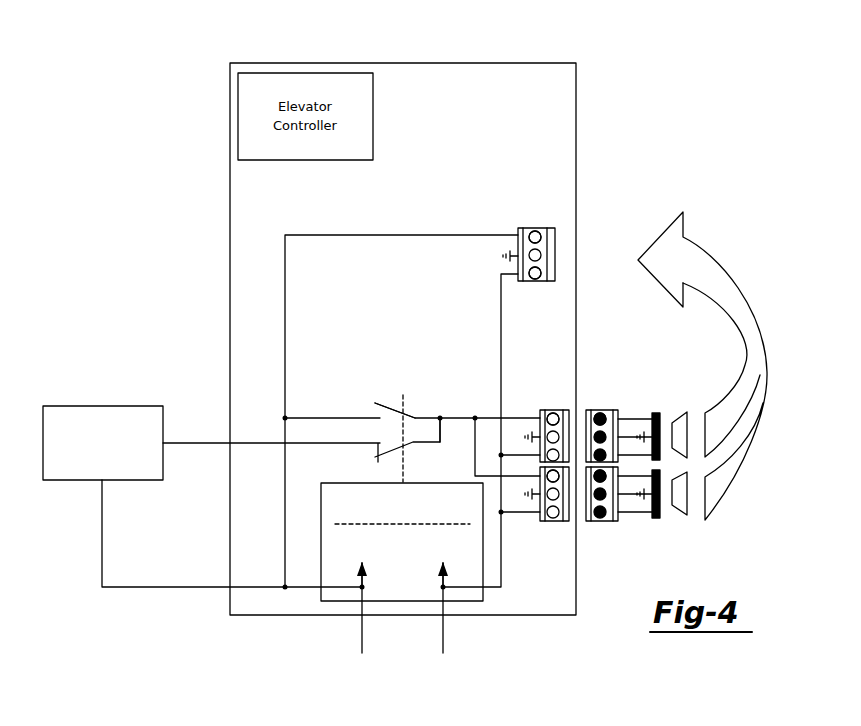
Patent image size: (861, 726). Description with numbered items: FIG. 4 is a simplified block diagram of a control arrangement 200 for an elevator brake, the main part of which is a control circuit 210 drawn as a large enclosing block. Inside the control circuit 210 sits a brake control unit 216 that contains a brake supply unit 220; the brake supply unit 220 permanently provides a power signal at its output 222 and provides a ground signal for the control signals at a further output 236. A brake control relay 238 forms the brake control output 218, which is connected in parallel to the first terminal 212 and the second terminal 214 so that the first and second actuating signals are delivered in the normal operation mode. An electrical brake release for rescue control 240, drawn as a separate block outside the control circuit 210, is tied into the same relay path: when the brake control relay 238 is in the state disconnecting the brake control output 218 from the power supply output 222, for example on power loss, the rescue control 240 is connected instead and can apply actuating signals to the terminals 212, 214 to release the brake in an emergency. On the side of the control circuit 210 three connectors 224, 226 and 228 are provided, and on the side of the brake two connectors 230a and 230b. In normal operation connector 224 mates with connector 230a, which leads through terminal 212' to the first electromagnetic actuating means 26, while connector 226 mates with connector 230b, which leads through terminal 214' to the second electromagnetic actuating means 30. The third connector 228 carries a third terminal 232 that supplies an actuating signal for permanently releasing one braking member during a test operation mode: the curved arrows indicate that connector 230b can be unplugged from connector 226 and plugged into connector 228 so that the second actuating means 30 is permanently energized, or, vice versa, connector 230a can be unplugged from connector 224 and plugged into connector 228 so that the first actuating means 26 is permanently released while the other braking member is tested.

The control arrangement 200 is at (235, 28).
The control circuit 210 is at (402, 60).
The electrical brake release for rescue control 240 is at (103, 406).
The brake control unit 216 is at (321, 498).
The brake supply unit 220 is at (402, 588).
The brake control relay 238 is at (383, 402).
The brake control output 218 is at (440, 416).
The third connector 228 is at (517, 226).
The third terminal 232 is at (541, 237).
The connector 226 is at (538, 409).
The second terminal 214 is at (557, 394).
The connector 224 is at (539, 523).
The first terminal 212 is at (560, 510).
The connector 230b is at (616, 409).
The second terminal of second actuating means 214' is at (593, 394).
The connector 230a is at (617, 523).
The first terminal of first actuating means 212' is at (598, 511).
The second electromagnetic actuating means 30 is at (660, 418).
The first electromagnetic actuating means 26 is at (660, 513).
The power supply output 222 is at (362, 588).
The ground output 236 is at (443, 588).